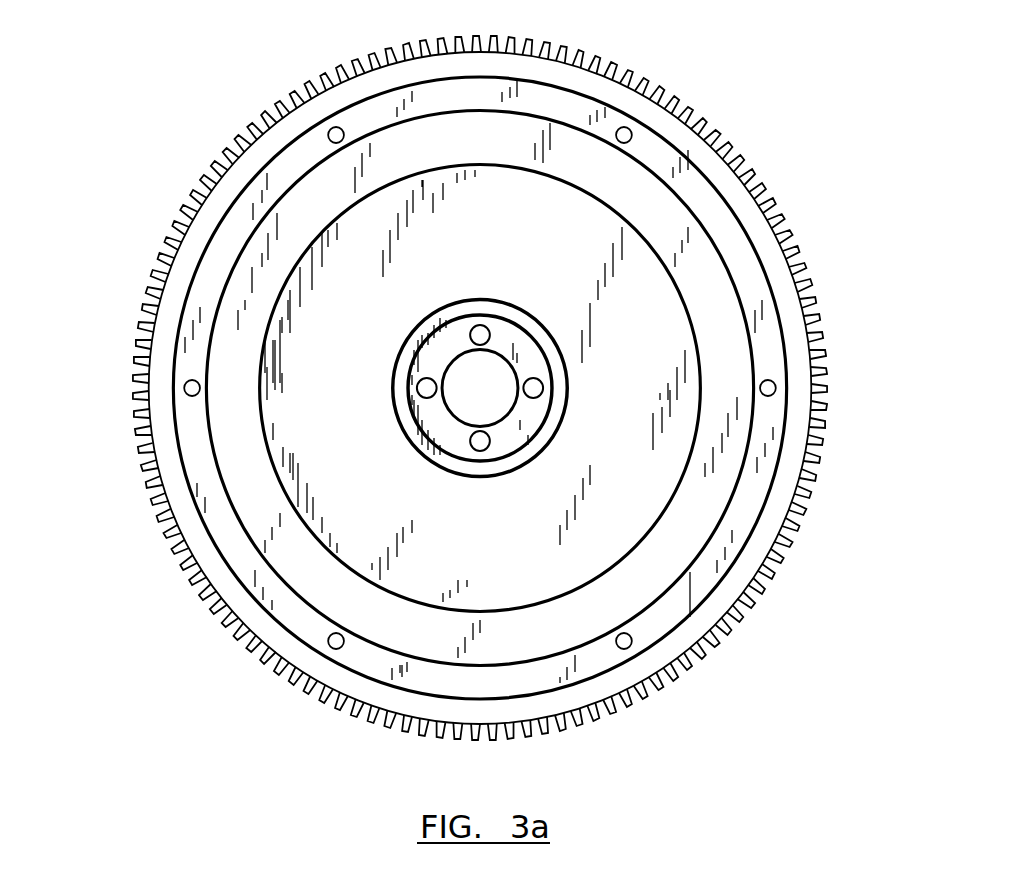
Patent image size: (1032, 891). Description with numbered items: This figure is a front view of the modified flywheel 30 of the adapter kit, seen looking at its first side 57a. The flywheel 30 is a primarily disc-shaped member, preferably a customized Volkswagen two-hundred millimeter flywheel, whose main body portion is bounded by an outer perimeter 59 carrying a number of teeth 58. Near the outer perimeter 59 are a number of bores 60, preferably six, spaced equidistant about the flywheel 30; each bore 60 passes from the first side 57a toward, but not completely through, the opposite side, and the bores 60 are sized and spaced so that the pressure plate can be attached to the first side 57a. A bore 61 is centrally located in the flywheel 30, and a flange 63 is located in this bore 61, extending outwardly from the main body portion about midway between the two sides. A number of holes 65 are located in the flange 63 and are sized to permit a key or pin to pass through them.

The flywheel 30 is at (485, 453).
The first side 57a is at (449, 406).
The teeth 58 is at (528, 388).
The outer perimeter 59 is at (521, 388).
The bores 60 is at (554, 388).
The bore 61 is at (632, 249).
The flange 63 is at (415, 246).
The holes 65 is at (284, 406).